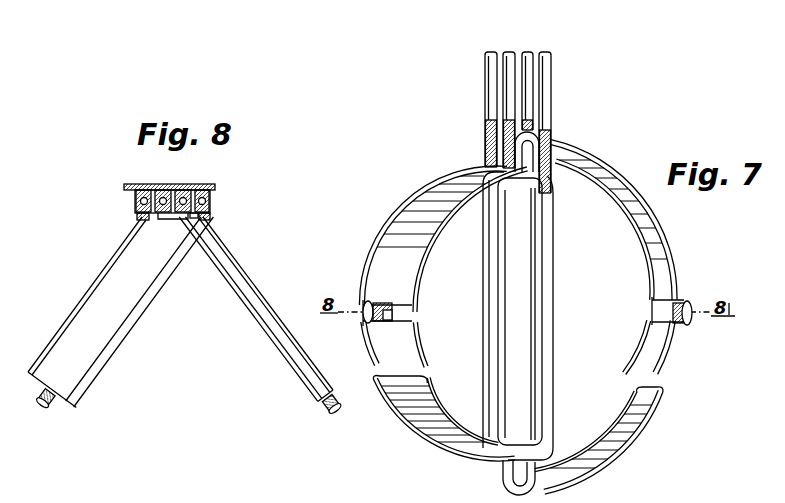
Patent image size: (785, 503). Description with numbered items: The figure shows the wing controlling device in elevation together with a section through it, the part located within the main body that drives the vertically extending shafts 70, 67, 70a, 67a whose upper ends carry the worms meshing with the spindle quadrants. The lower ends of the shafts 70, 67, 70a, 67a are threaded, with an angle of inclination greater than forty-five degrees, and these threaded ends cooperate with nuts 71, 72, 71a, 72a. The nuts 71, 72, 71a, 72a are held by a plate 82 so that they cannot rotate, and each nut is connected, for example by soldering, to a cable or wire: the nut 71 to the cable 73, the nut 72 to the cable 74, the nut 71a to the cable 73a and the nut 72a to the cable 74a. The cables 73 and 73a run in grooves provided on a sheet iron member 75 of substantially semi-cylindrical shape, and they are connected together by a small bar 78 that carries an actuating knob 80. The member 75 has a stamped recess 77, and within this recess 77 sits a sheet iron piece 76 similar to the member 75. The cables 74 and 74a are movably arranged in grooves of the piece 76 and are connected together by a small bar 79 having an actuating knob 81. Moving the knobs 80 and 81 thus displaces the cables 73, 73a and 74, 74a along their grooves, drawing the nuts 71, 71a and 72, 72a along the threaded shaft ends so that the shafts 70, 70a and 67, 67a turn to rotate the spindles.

In FIG. 7, the vertically extending shaft 67 is at (510, 52).
In FIG. 8, the vertically extending shaft 67 is at (177, 183).
In FIG. 7, the vertically extending shaft 67a is at (531, 52).
In FIG. 8, the vertically extending shaft 67a is at (193, 190).
In FIG. 7, the vertically extending shaft 70 is at (490, 93).
In FIG. 8, the vertically extending shaft 70 is at (153, 190).
In FIG. 7, the vertically extending shaft 70a is at (545, 97).
In FIG. 8, the vertically extending shaft 70a is at (213, 193).
In FIG. 8, the nut 71 is at (135, 210).
In FIG. 8, the nut 71a is at (210, 206).
In FIG. 8, the nut 72 is at (160, 215).
In FIG. 8, the nut 72a is at (202, 217).
In FIG. 7, the cable or wire 73 is at (404, 199).
In FIG. 8, the cable or wire 73 is at (140, 217).
In FIG. 7, the cable or wire 73a is at (427, 250).
In FIG. 8, the cable or wire 73a is at (208, 218).
In FIG. 7, the cable or wire 74 is at (620, 200).
In FIG. 8, the cable or wire 74 is at (166, 218).
In FIG. 7, the cable or wire 74a is at (655, 217).
In FIG. 8, the cable or wire 74a is at (204, 220).
In FIG. 7, the sheet iron member 75 is at (392, 288).
In FIG. 8, the sheet iron member 75 is at (95, 348).
In FIG. 7, the sheet iron piece 76 is at (650, 238).
In FIG. 8, the sheet iron piece 76 is at (272, 337).
In FIG. 7, the stamped recess 77 is at (523, 323).
In FIG. 8, the stamped recess 77 is at (172, 225).
In FIG. 7, the small bar 78 is at (400, 320).
In FIG. 7, the small bar 79 is at (658, 313).
In FIG. 7, the actuating knob 80 is at (413, 310).
In FIG. 8, the actuating knob 80 is at (41, 413).
In FIG. 7, the actuating knob 81 is at (683, 302).
In FIG. 8, the actuating knob 81 is at (337, 420).
In FIG. 8, the plate 82 is at (132, 184).